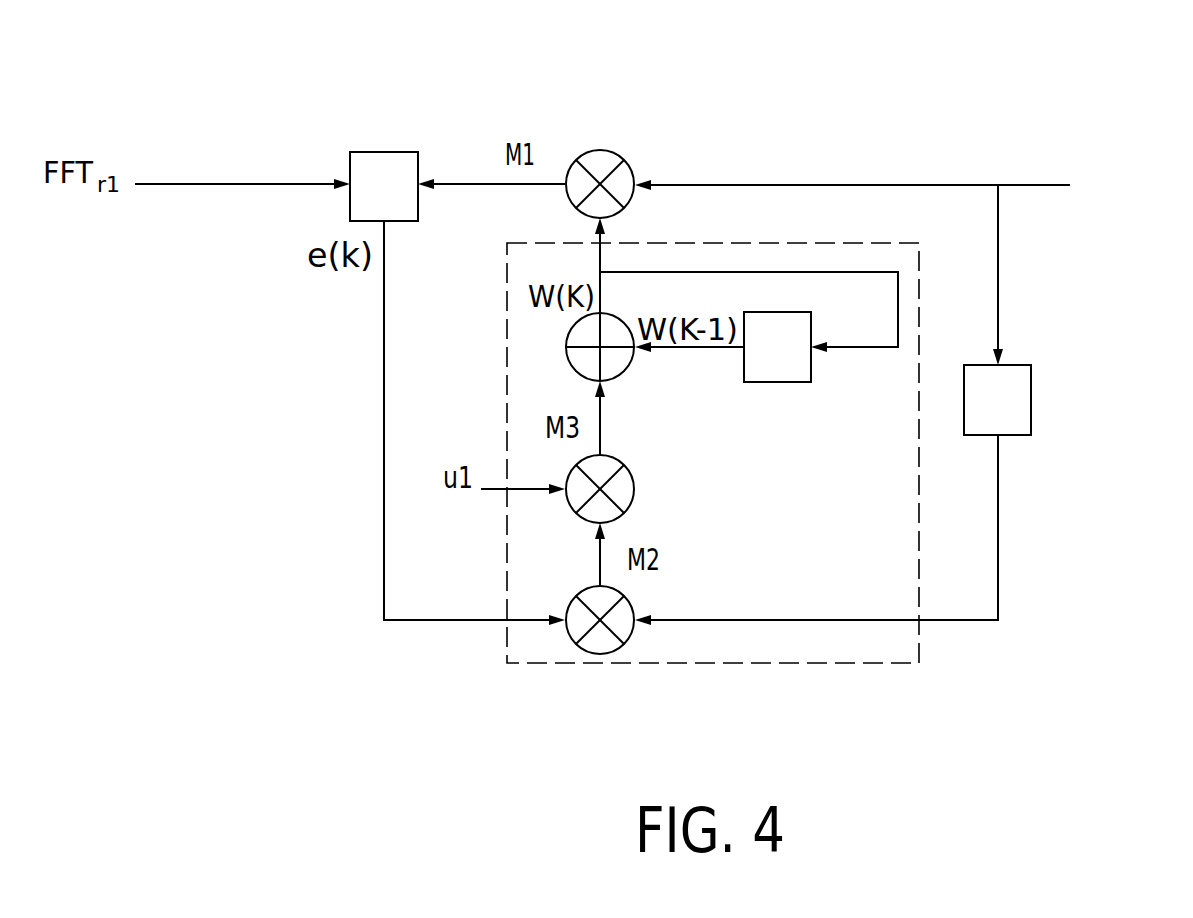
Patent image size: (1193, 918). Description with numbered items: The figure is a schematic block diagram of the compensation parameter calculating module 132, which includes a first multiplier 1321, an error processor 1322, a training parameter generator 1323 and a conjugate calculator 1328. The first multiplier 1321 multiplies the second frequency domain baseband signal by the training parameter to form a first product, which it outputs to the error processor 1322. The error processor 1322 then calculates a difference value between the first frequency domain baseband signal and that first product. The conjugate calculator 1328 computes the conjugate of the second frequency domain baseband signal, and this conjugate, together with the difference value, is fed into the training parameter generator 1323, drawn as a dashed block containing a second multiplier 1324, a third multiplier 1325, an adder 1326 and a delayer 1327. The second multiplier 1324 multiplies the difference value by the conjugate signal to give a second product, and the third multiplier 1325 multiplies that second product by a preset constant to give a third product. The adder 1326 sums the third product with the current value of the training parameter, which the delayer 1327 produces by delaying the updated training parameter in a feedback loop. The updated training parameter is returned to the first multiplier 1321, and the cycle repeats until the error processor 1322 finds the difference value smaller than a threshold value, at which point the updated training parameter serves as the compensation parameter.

The compensation parameter calculating module 132 is at (908, 103).
The first multiplier 1321 is at (603, 149).
The error processor 1322 is at (383, 152).
The training parameter generator 1323 is at (920, 633).
The second multiplier 1324 is at (582, 651).
The third multiplier 1325 is at (635, 489).
The adder 1326 is at (628, 370).
The delayer 1327 is at (784, 382).
The conjugate calculator 1328 is at (1031, 408).